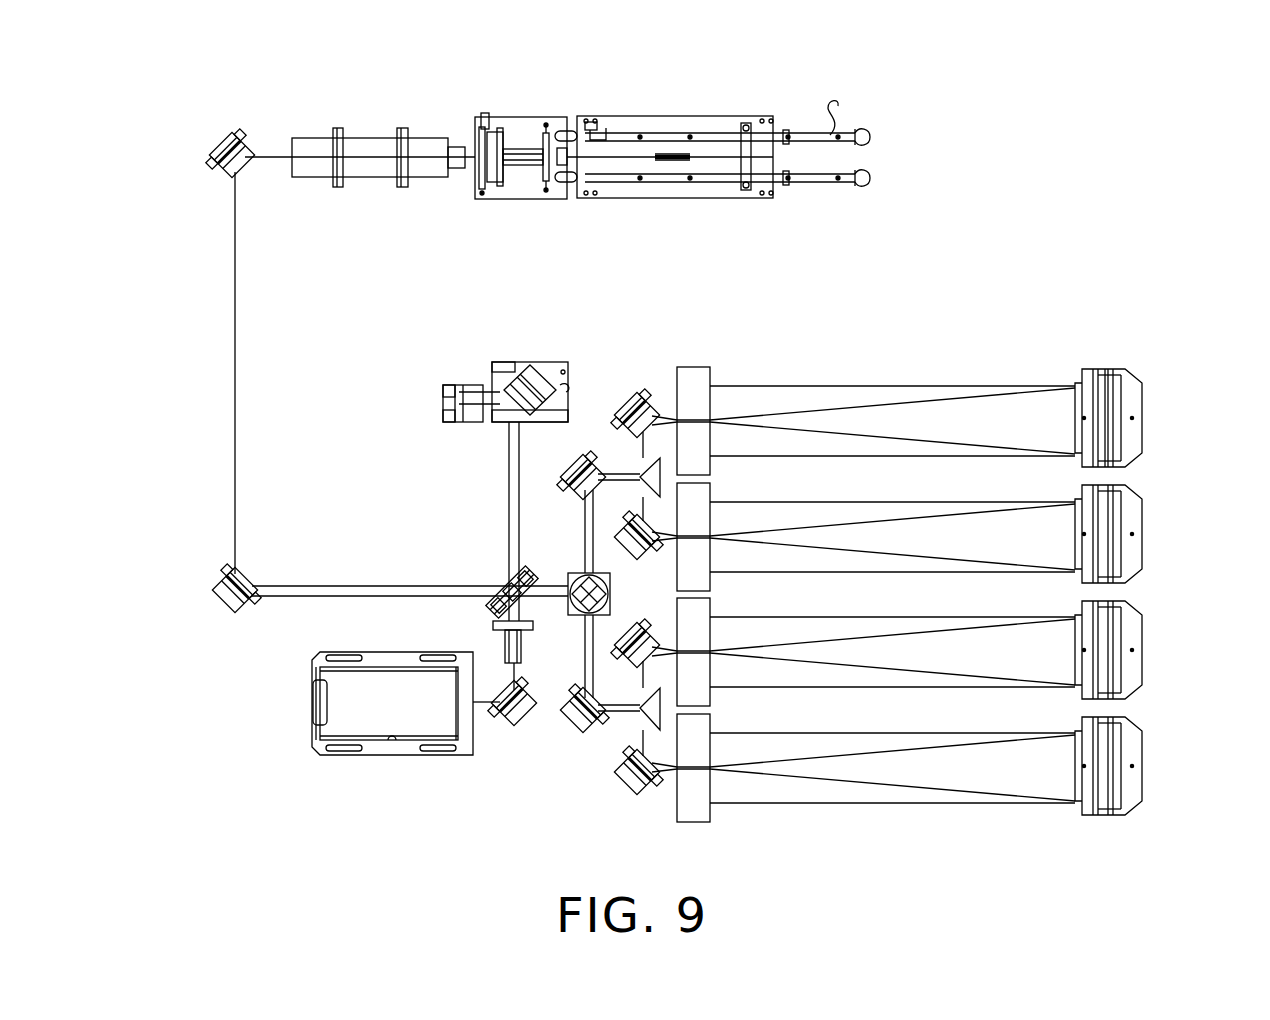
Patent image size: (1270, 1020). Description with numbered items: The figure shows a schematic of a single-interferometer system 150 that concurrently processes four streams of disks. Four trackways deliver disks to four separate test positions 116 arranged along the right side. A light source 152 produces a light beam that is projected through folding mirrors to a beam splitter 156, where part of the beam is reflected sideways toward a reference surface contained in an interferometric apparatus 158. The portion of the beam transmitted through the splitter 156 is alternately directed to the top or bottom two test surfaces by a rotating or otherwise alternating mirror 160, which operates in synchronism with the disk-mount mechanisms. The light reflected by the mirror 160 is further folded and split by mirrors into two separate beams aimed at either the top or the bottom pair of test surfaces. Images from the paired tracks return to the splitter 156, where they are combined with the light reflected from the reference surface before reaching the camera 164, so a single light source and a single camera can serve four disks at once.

The test position 116 is at (1105, 400).
The system 150 is at (968, 205).
The light source 152 is at (664, 116).
The beam splitter 156 is at (497, 588).
The interferometric apparatus 158 is at (463, 388).
The rotating or alternating mirror 160 is at (568, 580).
The camera 164 is at (312, 708).